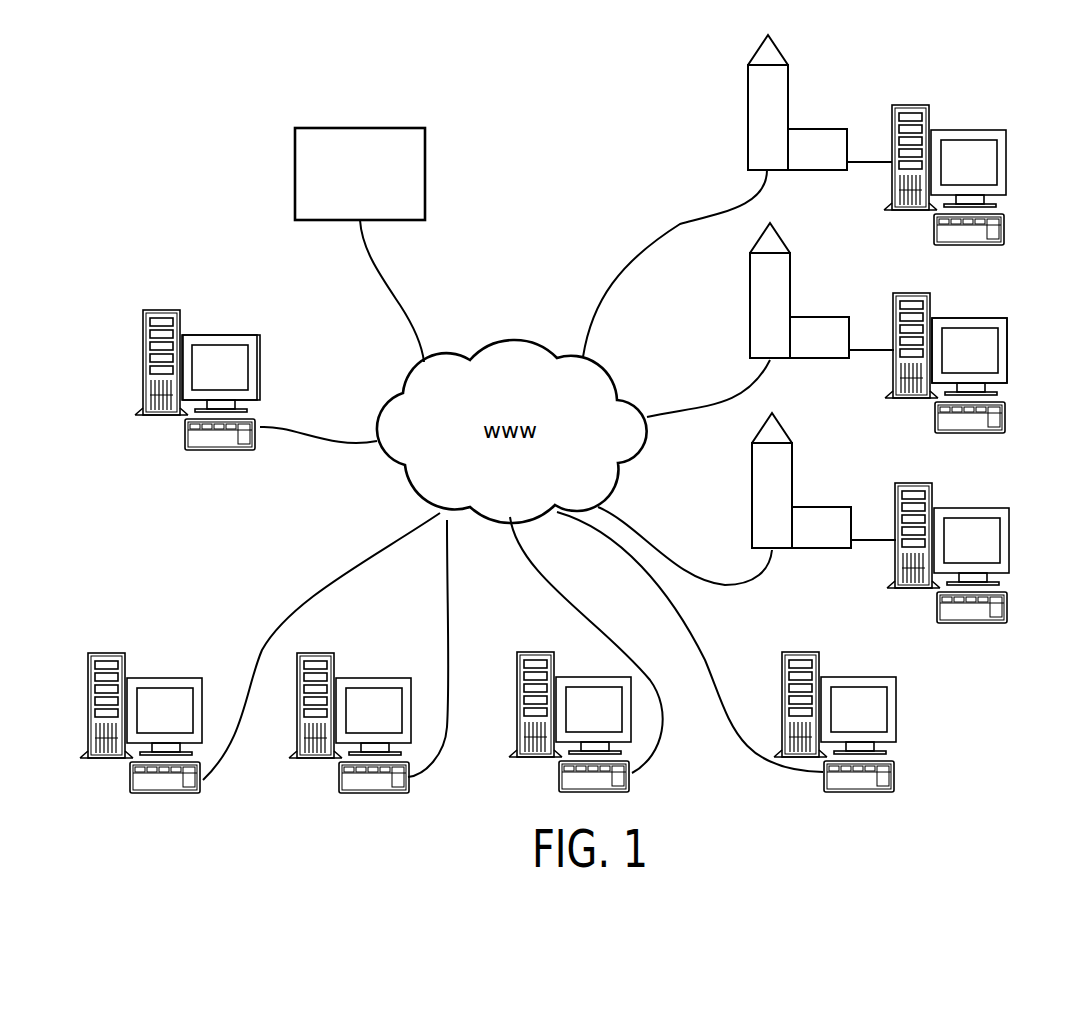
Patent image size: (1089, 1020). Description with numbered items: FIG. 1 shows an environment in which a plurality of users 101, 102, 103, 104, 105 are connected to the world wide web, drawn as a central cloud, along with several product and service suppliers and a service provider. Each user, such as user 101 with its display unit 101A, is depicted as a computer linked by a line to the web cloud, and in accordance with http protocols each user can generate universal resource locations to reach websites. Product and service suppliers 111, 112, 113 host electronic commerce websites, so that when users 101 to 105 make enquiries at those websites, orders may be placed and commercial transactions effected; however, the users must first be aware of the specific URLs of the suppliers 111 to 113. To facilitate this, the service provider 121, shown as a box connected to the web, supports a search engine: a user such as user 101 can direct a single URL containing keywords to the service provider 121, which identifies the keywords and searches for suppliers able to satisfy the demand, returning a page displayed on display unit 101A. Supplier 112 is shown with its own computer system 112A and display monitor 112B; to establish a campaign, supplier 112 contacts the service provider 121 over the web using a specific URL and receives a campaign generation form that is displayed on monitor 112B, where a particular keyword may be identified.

The user 101 is at (235, 369).
The display unit 101A is at (260, 362).
The user 102 is at (167, 678).
The user 103 is at (375, 678).
The user 104 is at (596, 677).
The user 105 is at (860, 676).
The product and service supplier 111 is at (748, 112).
The supplier 112 is at (750, 297).
The computer system 112A is at (907, 293).
The display monitor 112B is at (1008, 350).
The product and service supplier 113 is at (752, 485).
The service provider 121 is at (425, 175).